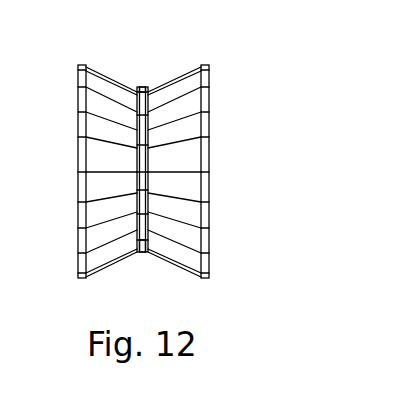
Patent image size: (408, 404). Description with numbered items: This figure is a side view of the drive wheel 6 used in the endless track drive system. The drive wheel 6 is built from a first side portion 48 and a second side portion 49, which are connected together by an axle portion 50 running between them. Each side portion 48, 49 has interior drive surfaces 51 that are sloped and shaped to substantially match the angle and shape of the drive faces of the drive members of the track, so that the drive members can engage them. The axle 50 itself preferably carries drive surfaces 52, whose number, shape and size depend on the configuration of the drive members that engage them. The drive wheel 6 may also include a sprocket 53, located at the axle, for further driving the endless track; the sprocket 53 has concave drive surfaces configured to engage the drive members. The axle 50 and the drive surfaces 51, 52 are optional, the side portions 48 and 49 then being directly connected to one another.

The drive wheel 6 is at (210, 78).
The first side portion 48 is at (78, 243).
The second side portion 49 is at (210, 244).
The axle portion 50 is at (150, 92).
The interior drive surfaces 51 is at (100, 256).
The drive surfaces 52 is at (147, 246).
The sprocket 53 is at (141, 86).